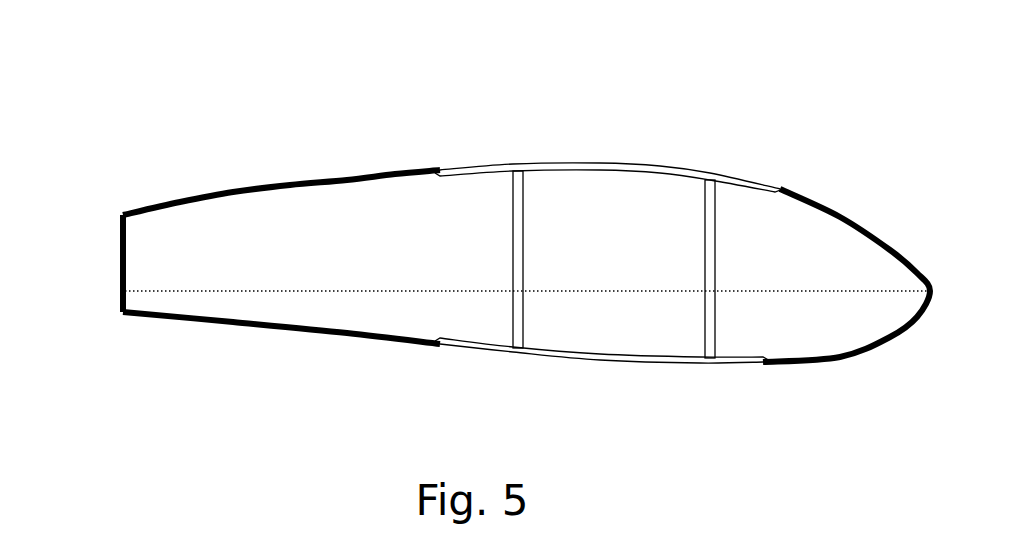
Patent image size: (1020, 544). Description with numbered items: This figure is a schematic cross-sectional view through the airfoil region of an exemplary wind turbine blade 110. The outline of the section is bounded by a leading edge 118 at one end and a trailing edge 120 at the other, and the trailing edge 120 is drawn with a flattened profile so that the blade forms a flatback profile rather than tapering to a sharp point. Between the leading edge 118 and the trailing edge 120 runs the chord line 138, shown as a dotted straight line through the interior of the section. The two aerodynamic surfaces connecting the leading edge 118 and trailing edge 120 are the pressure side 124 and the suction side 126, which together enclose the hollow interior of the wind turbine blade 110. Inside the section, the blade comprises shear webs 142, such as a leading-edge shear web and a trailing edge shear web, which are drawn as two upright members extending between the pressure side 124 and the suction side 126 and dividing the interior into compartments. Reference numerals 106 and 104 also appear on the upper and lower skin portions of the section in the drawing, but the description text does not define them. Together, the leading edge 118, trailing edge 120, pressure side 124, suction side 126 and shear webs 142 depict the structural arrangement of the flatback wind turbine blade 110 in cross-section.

The wind turbine blade 110 is at (300, 100).
The chord line 138 is at (305, 291).
The upper skin 106 is at (638, 165).
The suction side 126 is at (758, 178).
The leading edge 118 is at (928, 285).
The trailing edge 120 is at (119, 253).
The shear webs 142 is at (517, 335).
The lower skin 104 is at (605, 357).
The pressure side 124 is at (742, 363).